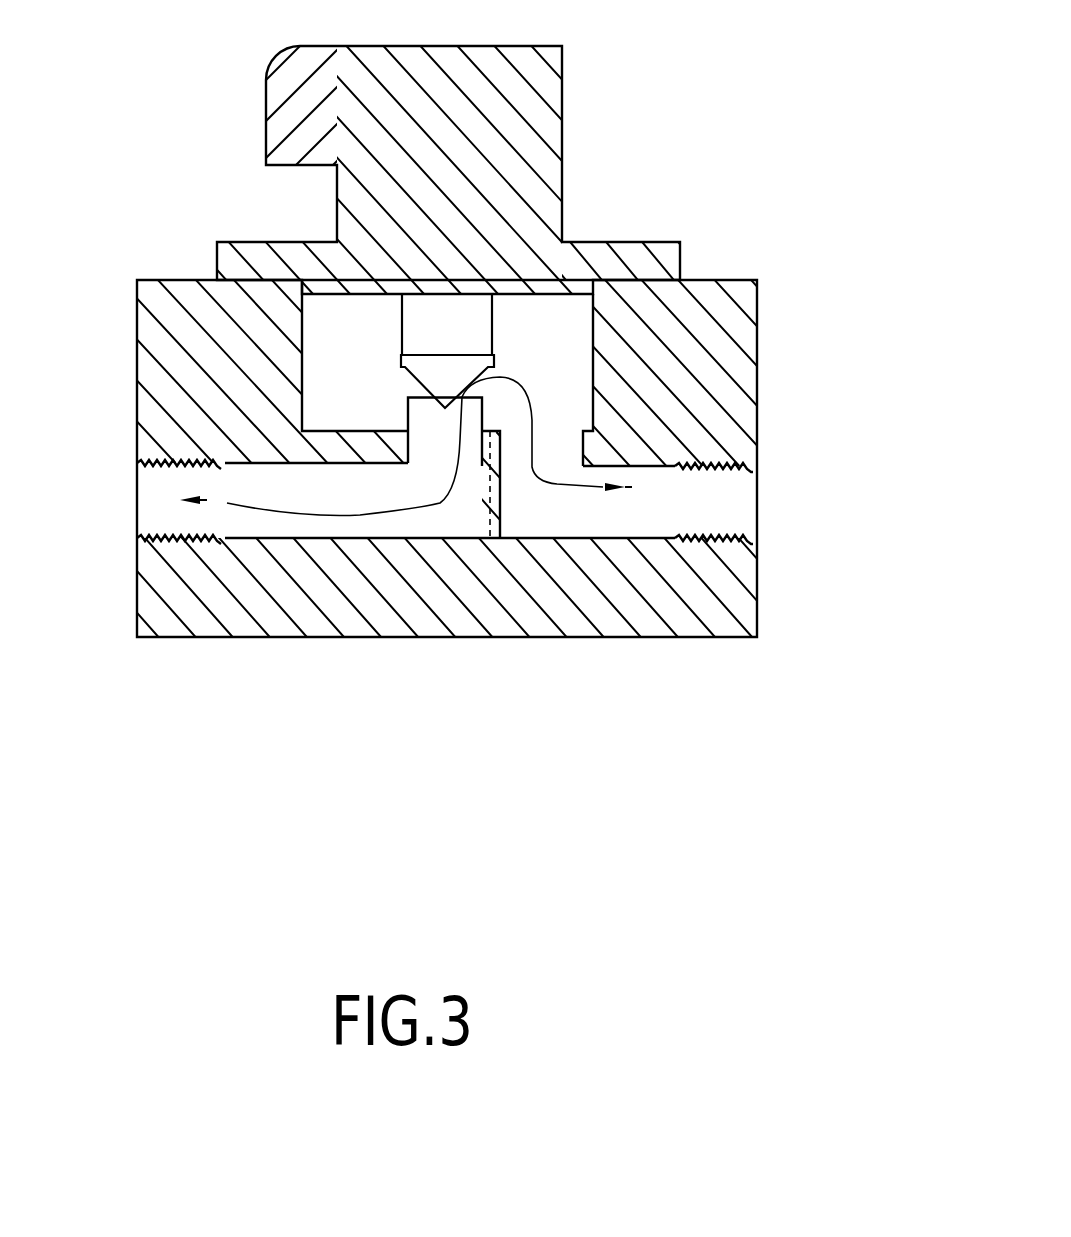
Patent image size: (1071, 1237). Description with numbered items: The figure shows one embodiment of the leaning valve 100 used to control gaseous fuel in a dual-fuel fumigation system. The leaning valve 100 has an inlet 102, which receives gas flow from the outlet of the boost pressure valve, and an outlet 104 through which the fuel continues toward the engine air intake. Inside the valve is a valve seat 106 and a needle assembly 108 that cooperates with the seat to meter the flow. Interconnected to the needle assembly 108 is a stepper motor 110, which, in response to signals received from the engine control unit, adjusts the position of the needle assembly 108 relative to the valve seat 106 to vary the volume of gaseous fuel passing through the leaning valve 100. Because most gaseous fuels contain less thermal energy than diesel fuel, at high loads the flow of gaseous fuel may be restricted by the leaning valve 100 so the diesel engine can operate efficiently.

The leaning valve 100 is at (280, 693).
The inlet 102 is at (137, 482).
The outlet 104 is at (758, 483).
The valve seat 106 is at (410, 396).
The needle assembly 108 is at (475, 337).
The stepper motor 110 is at (562, 97).